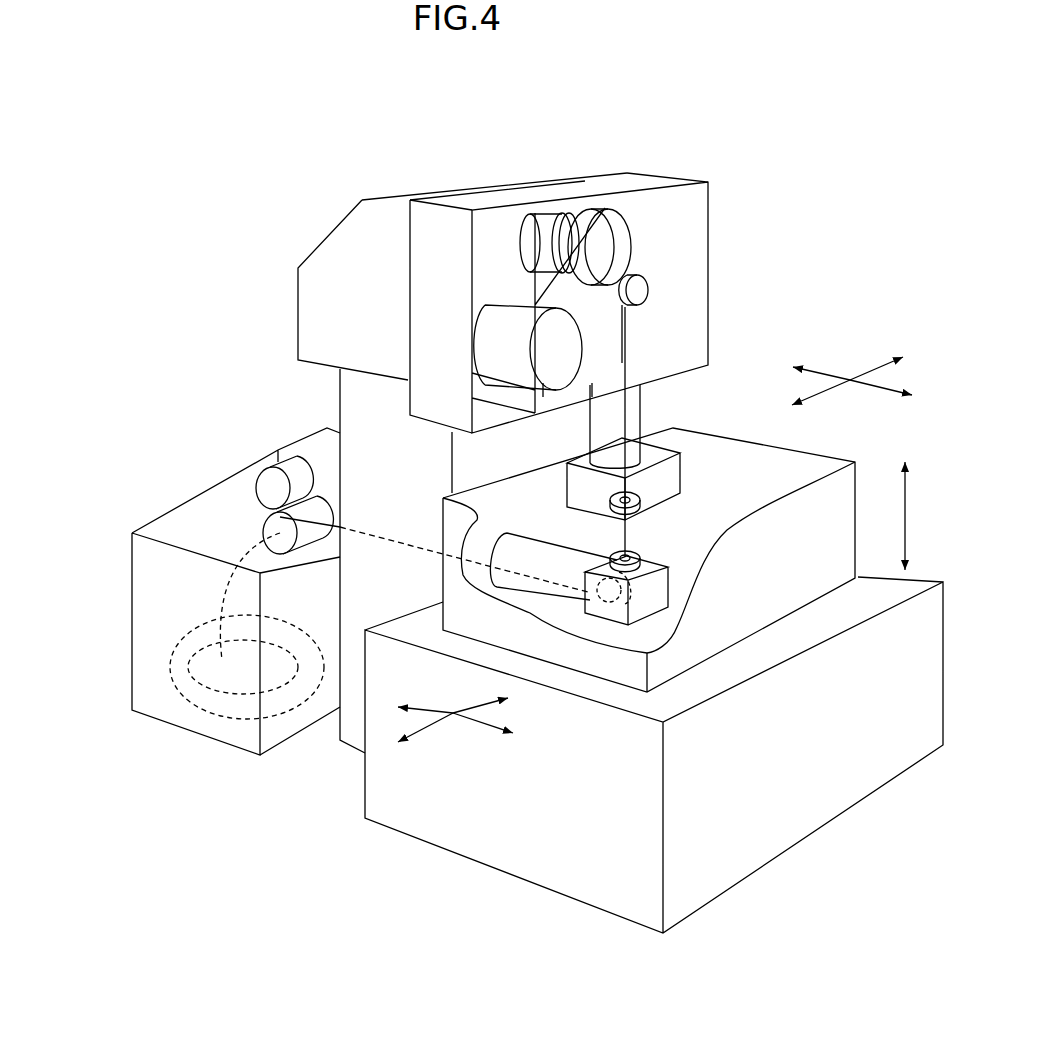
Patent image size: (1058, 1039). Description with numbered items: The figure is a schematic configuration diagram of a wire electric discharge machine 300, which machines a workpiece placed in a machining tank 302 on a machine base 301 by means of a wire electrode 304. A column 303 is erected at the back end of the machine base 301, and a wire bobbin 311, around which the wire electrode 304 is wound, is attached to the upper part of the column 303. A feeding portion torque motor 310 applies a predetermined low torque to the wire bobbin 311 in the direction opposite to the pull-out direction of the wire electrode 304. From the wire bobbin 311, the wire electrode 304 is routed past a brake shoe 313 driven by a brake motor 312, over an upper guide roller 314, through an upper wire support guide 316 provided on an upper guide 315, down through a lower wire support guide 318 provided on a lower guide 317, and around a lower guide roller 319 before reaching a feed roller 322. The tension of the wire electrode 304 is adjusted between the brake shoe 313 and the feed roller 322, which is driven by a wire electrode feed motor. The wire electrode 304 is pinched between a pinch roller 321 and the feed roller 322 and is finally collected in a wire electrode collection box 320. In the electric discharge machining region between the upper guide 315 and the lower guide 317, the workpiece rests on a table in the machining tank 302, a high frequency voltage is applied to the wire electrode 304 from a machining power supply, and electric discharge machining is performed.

The wire electric discharge machine 300 is at (231, 148).
The machine base 301 is at (823, 795).
The machining tank 302 is at (823, 568).
The column 303 is at (348, 732).
The wire electrode 304 is at (627, 320).
The feeding portion torque motor 310 is at (472, 310).
The wire bobbin 311 is at (502, 315).
The brake motor 312 is at (548, 222).
The brake shoe 313 is at (603, 208).
The upper guide roller 314 is at (645, 276).
The upper guide 315 is at (680, 450).
The upper wire support guide 316 is at (640, 496).
The lower guide 317 is at (645, 620).
The lower wire support guide 318 is at (640, 555).
The lower guide roller 319 is at (600, 598).
The wire electrode collection box 320 is at (143, 620).
The pinch roller 321 is at (272, 480).
The feed roller 322 is at (278, 533).